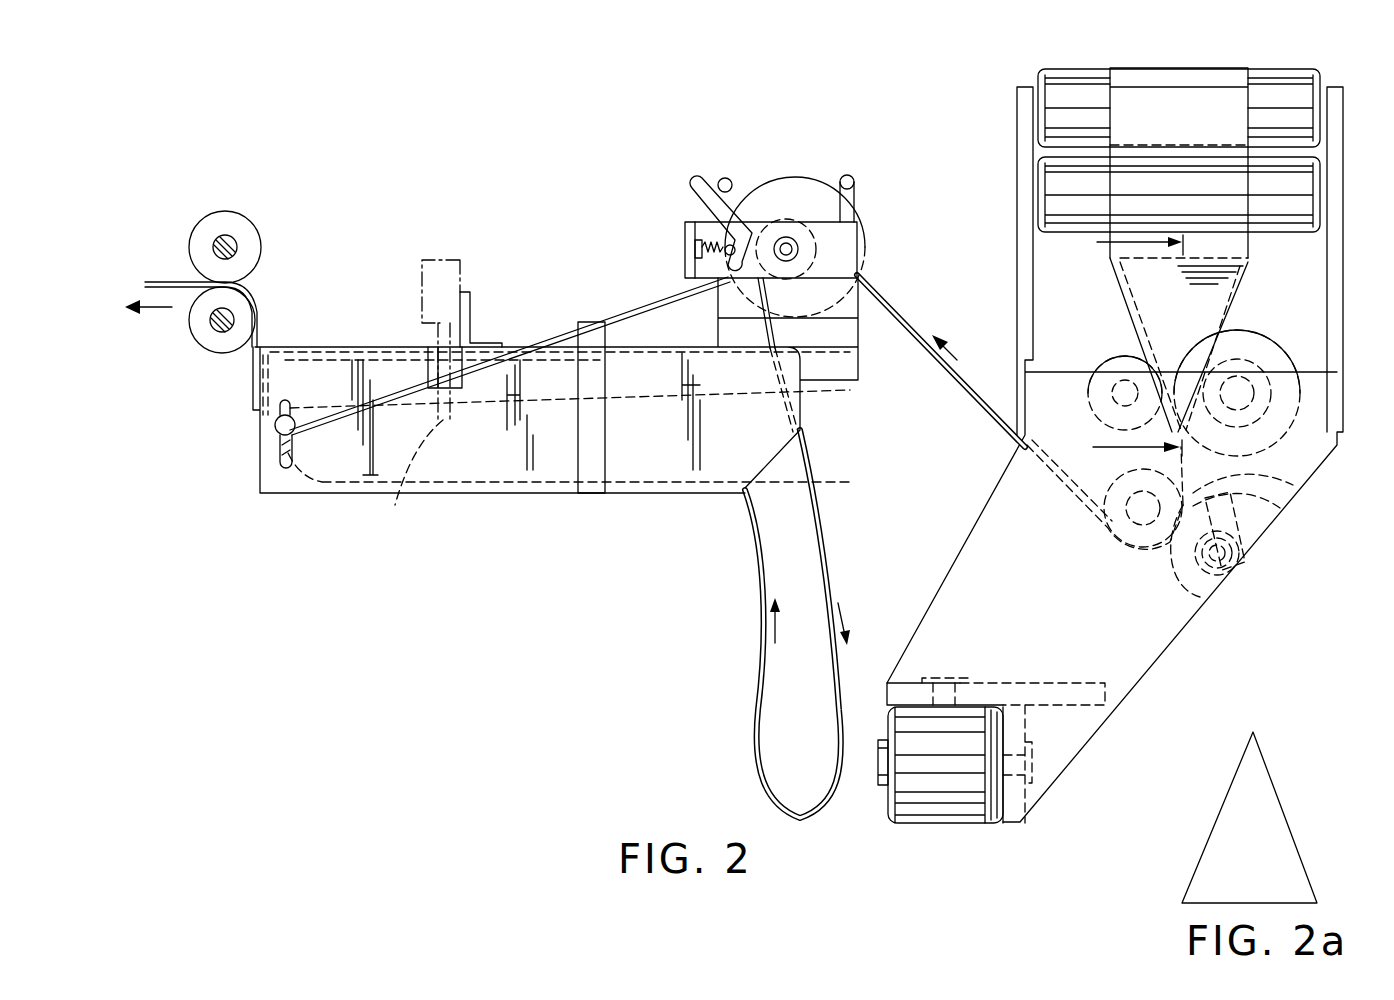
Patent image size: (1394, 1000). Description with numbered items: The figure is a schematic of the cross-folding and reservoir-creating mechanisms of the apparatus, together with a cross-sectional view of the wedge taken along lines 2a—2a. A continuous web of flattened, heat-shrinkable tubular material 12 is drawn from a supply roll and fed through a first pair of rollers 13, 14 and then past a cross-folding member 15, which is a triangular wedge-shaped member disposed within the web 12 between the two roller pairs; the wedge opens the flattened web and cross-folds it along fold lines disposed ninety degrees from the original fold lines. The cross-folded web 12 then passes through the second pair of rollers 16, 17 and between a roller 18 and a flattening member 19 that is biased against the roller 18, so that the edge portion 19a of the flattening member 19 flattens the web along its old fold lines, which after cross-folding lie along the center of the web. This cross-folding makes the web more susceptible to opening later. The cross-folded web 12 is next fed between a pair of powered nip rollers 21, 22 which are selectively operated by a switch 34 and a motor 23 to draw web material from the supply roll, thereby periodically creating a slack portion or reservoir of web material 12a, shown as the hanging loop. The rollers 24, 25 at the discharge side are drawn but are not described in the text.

In FIG. 2, the web of heat-shrinkable tubular material 12 is at (1243, 73).
In FIG. 2, the slack portion or reservoir of web material 12a is at (758, 565).
In FIG. 2, the roller 13 is at (1303, 87).
In FIG. 2, the roller 14 is at (1308, 205).
In FIG. 2, the cross-folding member 15 is at (1218, 315).
In FIG. 2A, the cross-folding member 15 is at (1233, 828).
In FIG. 2, the roller 16 is at (1245, 363).
In FIG. 2, the roller 17 is at (1117, 362).
In FIG. 2, the roller 18 is at (1203, 602).
In FIG. 2, the flattening member 19 is at (1280, 512).
In FIG. 2, the edge portion of flattening member 19a is at (1293, 485).
In FIG. 2, the powered nip roller 21 is at (792, 217).
In FIG. 2, the powered nip roller 22 is at (702, 222).
In FIG. 2, the motor 23 is at (760, 185).
In FIG. 2, the pull roller 24 is at (247, 237).
In FIG. 2, the pull roller 25 is at (207, 335).
In FIG. 2, the switch 34 is at (410, 498).
In FIG. 2, the section line 2a— 2a is at (1116, 347).